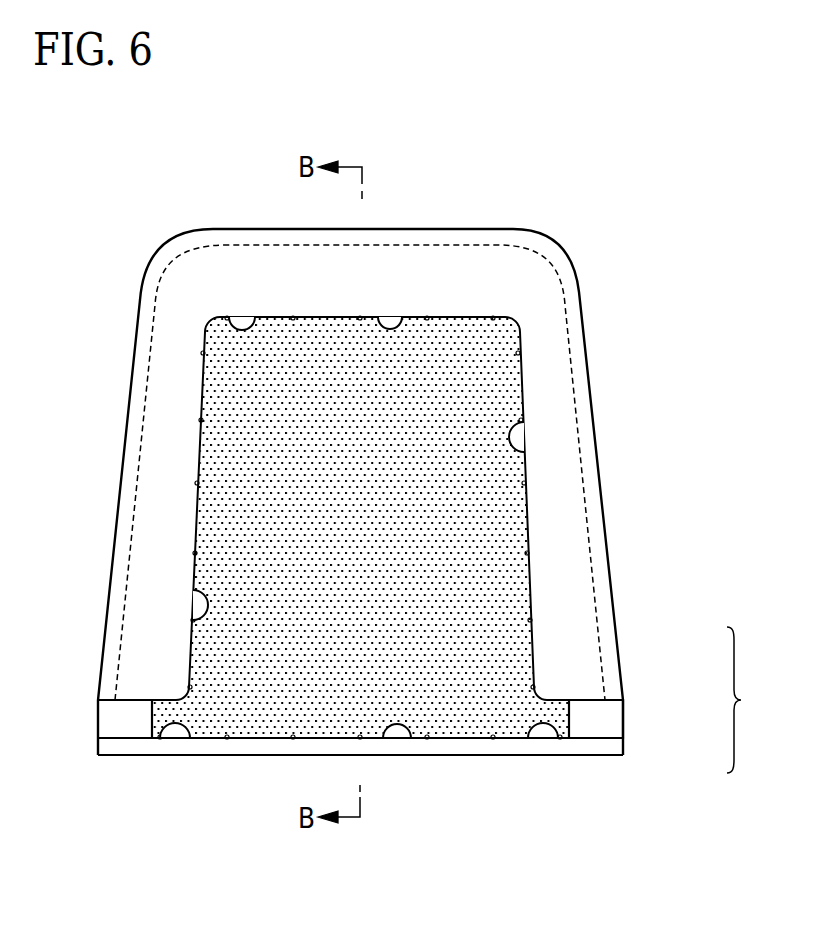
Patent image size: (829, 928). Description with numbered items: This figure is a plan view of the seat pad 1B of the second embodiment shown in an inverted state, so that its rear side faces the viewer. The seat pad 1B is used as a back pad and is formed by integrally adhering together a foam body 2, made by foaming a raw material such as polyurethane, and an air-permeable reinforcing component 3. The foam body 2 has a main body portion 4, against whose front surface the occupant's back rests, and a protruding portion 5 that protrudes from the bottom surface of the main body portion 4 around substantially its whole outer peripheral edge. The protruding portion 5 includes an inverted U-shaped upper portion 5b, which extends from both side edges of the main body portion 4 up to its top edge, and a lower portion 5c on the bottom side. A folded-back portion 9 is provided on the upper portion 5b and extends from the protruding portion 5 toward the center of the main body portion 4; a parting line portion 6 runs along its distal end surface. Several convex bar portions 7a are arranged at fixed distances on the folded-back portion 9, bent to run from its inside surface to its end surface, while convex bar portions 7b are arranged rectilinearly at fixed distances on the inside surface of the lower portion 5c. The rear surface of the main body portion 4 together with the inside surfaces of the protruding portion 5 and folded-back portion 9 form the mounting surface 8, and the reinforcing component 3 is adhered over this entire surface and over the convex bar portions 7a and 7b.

The seat pad 1B is at (607, 136).
The foam body 2 is at (743, 700).
The reinforcing component 3 is at (228, 458).
The main body portion 4 is at (602, 722).
The protruding portion 5 is at (613, 748).
The upper portion 5b is at (597, 528).
The lower portion 5c is at (470, 747).
The parting line portion 6 is at (403, 328).
The convex bar portions 7a is at (257, 333).
The convex bar portions 7b is at (190, 745).
The mounting surface 8 is at (458, 347).
The folded-back portion 9 is at (582, 665).